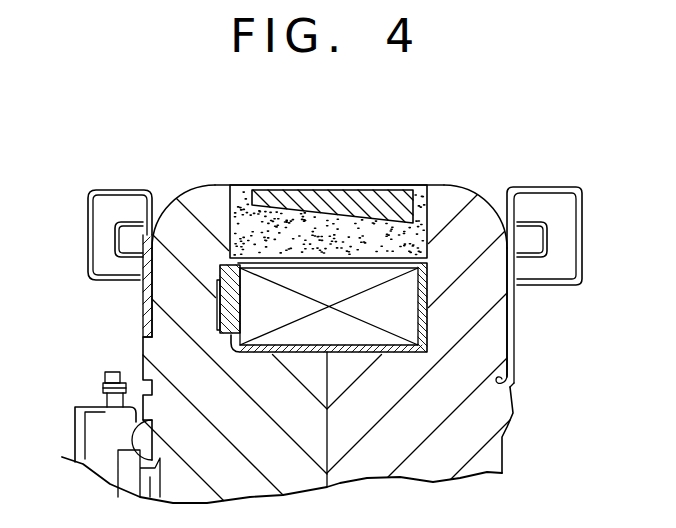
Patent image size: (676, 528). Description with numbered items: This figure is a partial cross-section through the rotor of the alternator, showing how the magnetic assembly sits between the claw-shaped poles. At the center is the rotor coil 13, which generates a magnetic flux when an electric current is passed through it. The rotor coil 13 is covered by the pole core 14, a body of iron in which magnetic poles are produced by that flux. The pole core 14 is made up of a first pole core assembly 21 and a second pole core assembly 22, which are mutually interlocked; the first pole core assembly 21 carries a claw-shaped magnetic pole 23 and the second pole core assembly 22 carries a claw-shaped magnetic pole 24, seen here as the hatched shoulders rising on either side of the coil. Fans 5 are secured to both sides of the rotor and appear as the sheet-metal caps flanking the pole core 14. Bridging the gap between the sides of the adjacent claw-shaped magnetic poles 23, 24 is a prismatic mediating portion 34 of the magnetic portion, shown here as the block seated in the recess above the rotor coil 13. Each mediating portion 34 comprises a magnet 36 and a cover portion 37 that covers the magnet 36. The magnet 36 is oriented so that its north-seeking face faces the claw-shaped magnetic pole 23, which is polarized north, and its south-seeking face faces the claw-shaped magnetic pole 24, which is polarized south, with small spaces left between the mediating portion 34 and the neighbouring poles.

The fan 5 is at (97, 225).
The rotor coil 13 is at (253, 311).
The pole core 14 is at (490, 457).
The first pole core assembly 21 is at (488, 342).
The second pole core assembly 22 is at (170, 419).
The claw-shaped magnetic pole 23 is at (485, 210).
The claw-shaped magnetic pole 24 is at (168, 222).
The mediating portion 34 is at (340, 186).
The magnet 36 is at (340, 195).
The cover portion 37 is at (420, 188).